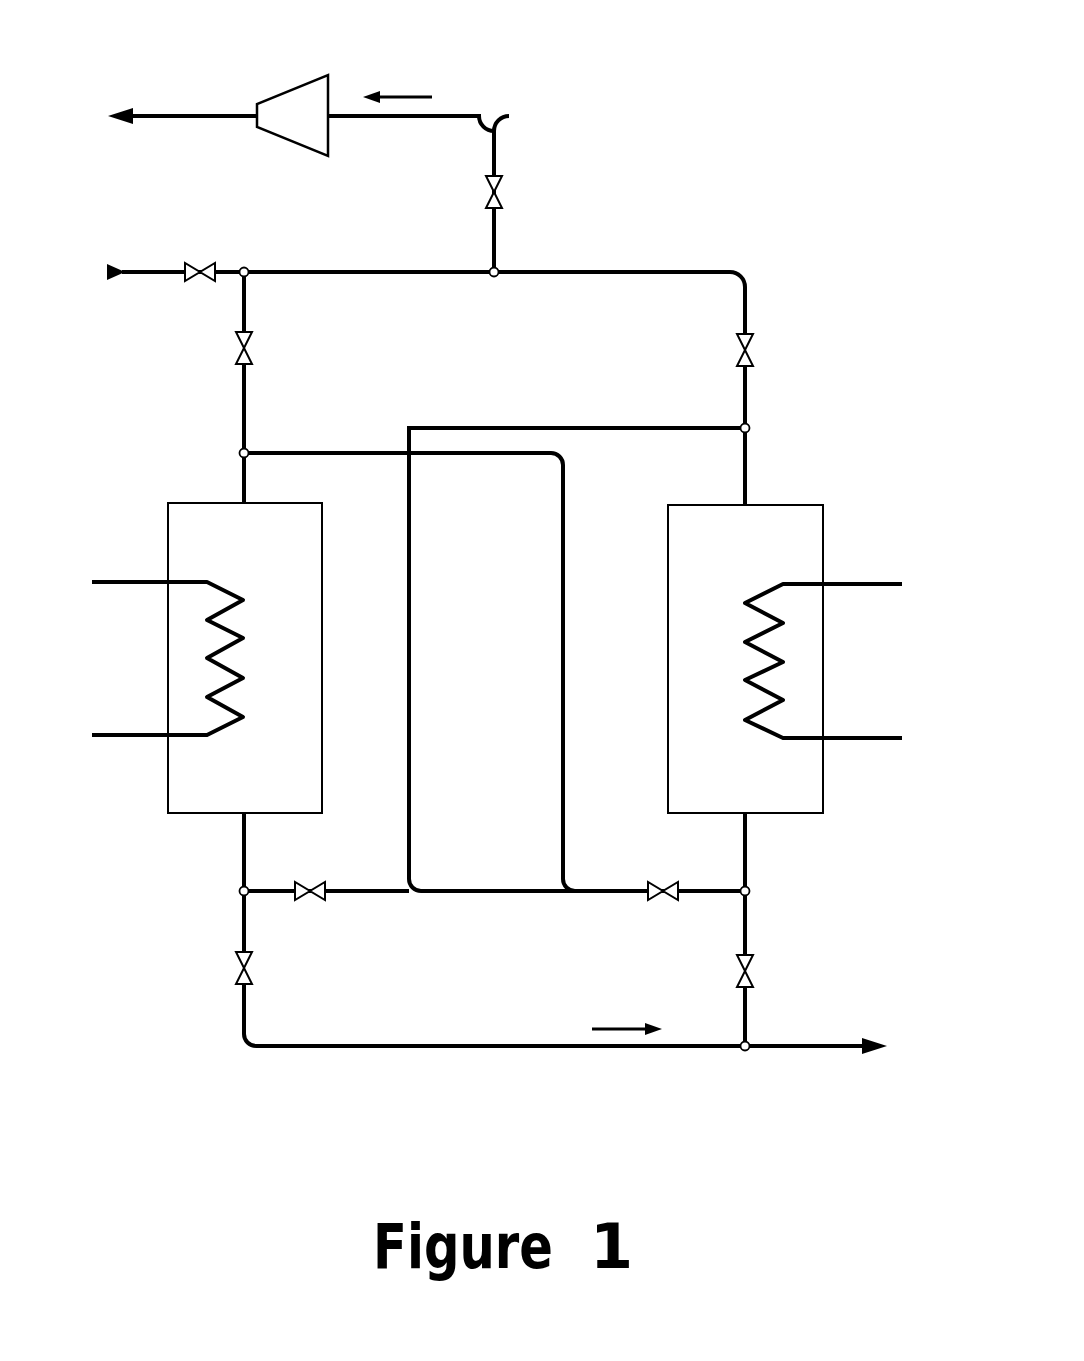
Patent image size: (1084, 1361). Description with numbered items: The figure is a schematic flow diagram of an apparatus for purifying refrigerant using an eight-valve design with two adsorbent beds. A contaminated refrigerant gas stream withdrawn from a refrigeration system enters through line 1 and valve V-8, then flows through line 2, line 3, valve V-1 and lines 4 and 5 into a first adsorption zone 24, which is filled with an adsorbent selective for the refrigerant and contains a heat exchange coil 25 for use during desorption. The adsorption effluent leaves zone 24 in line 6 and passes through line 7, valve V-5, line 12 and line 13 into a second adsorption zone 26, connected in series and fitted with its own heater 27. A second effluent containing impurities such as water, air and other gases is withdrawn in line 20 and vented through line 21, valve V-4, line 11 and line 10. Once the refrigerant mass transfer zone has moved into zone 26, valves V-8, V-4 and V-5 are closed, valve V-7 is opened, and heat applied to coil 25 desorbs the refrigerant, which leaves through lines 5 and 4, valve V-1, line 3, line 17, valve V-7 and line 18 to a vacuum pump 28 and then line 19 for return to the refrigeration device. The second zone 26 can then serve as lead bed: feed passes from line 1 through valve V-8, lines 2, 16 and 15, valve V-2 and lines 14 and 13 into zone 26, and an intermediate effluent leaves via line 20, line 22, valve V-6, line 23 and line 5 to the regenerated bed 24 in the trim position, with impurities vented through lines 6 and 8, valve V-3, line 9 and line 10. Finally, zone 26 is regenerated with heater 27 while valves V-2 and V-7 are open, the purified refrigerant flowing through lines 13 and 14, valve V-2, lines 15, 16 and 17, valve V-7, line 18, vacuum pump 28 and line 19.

The line 1 is at (168, 246).
The line 2 is at (249, 244).
The line 3 is at (219, 302).
The line 4 is at (220, 391).
The line 5 is at (220, 457).
The line 6 is at (218, 852).
The line 7 is at (275, 861).
The line 8 is at (220, 909).
The line 9 is at (468, 1002).
The line 10 is at (816, 1021).
The line 11 is at (781, 1000).
The line 12 is at (577, 659).
The line 13 is at (781, 449).
The line 14 is at (783, 385).
The line 15 is at (775, 291).
The line 16 is at (487, 243).
The line 17 is at (469, 194).
The line 18 is at (425, 93).
The line 19 is at (184, 89).
The line 20 is at (783, 852).
The line 21 is at (779, 895).
The line 22 is at (696, 863).
The line 23 is at (453, 672).
The first adsorption zone 24 is at (283, 658).
The heat exchange coil 25 is at (150, 627).
The second adsorption zone 26 is at (706, 659).
The heater 27 is at (842, 630).
The vacuum pump 28 is at (330, 85).
The valve V-1 is at (290, 322).
The valve V-2 is at (697, 320).
The valve V-3 is at (290, 957).
The valve V-4 is at (696, 966).
The valve V-5 is at (353, 912).
The valve V-6 is at (611, 920).
The valve V-7 is at (539, 166).
The valve V-8 is at (157, 293).